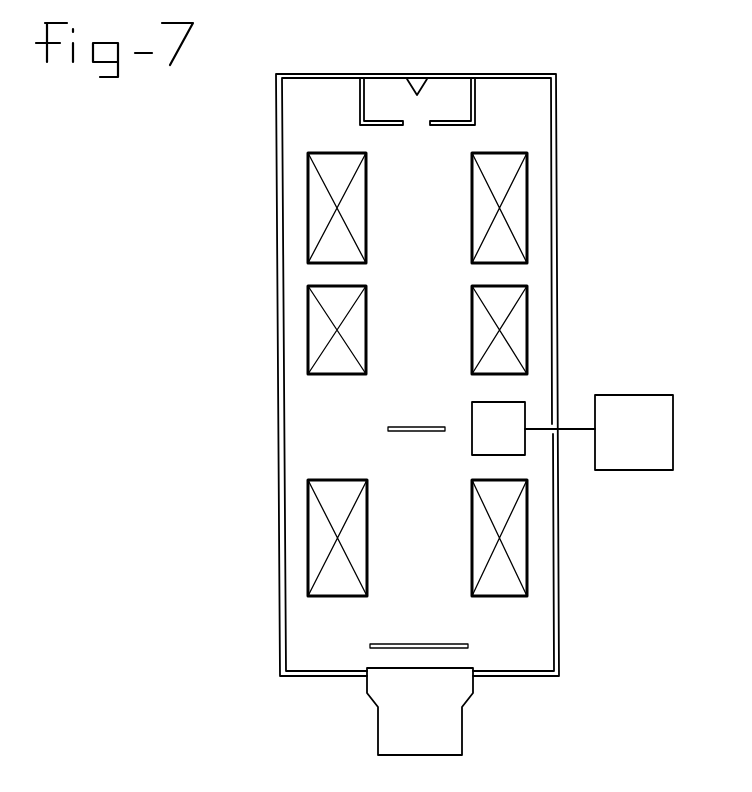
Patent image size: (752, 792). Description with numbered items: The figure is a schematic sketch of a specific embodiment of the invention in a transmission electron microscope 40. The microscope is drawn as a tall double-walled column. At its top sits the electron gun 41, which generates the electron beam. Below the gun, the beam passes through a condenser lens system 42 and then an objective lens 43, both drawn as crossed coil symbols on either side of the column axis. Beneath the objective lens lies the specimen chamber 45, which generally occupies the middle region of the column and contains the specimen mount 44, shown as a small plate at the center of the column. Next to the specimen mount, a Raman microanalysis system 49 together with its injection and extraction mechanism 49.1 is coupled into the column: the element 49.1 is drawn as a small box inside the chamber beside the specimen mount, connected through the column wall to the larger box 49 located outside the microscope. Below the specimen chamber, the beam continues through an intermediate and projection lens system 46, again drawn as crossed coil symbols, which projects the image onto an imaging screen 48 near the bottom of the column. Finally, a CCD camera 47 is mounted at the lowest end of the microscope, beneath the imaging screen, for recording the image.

The transmission electron microscope 40 is at (270, 322).
The electron gun 41 is at (358, 105).
The condenser lens system 42 is at (517, 202).
The objective lens 43 is at (517, 330).
The specimen mount 44 is at (425, 432).
The specimen chamber 45 is at (338, 407).
The intermediate and projection lens system 46 is at (518, 555).
The CCD camera 47 is at (448, 727).
The imaging screen 48 is at (466, 645).
The Raman microanalysis system 49 is at (642, 405).
The injection and extraction mechanism 49.1 is at (482, 412).